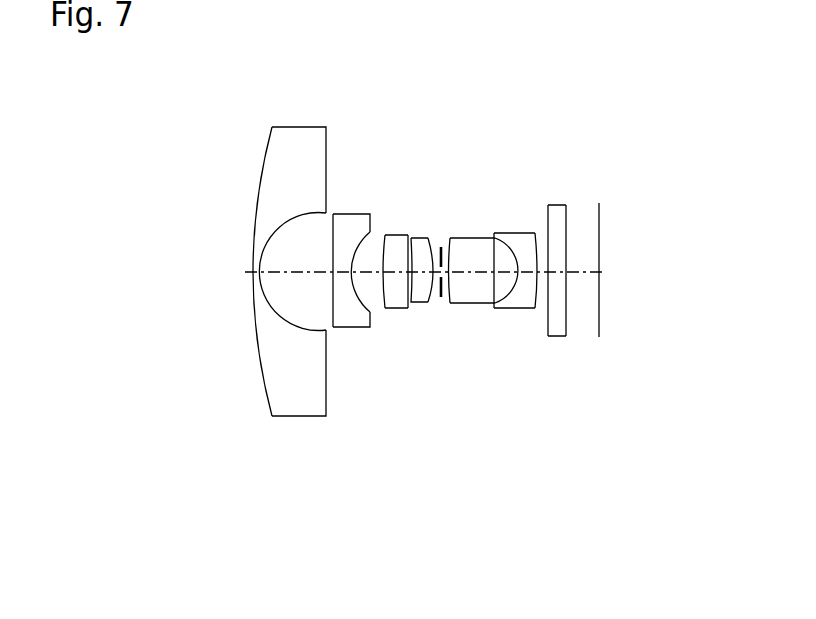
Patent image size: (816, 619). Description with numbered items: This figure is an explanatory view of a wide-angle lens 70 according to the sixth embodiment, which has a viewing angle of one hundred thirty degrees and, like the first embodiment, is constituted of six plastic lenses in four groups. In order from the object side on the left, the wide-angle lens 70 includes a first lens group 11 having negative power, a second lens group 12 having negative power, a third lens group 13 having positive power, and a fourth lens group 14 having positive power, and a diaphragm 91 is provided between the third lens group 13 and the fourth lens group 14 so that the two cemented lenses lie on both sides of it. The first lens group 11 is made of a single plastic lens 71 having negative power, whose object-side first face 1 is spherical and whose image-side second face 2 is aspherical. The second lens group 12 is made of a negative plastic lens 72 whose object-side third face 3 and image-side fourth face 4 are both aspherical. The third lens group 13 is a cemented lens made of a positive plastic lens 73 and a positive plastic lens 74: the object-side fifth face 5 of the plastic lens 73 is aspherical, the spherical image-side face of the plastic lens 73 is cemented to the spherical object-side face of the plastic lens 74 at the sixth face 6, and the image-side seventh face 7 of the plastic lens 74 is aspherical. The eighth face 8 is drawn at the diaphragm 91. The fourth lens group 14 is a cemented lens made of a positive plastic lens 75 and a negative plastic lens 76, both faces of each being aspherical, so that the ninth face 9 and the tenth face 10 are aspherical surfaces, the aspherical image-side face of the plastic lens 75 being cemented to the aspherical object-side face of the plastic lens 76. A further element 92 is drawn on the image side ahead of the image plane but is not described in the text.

The wide-angle lens 70 is at (419, 232).
The first lens group 11 is at (411, 271).
The plastic lens 71 is at (245, 271).
The second lens group 12 is at (433, 245).
The lens 72 is at (293, 245).
The third lens group 13 is at (520, 270).
The fourth lens group 14 is at (520, 262).
The plastic lens 73 is at (398, 287).
The plastic lens 74 is at (437, 273).
The plastic lens 75 is at (489, 273).
The plastic lens 76 is at (543, 279).
The diaphragm 91 is at (442, 247).
The cover glass 92 is at (556, 205).
The lens surface 1 is at (252, 285).
The second face 2 is at (283, 302).
The third face 3 is at (332, 306).
The fourth face 4 is at (355, 296).
The fifth face 5 is at (392, 296).
The lens surface 6 is at (421, 294).
The seventh face 7 is at (440, 297).
The lens surface 8 is at (450, 285).
The ninth face 9 is at (463, 300).
The tenth face 10 is at (515, 296).